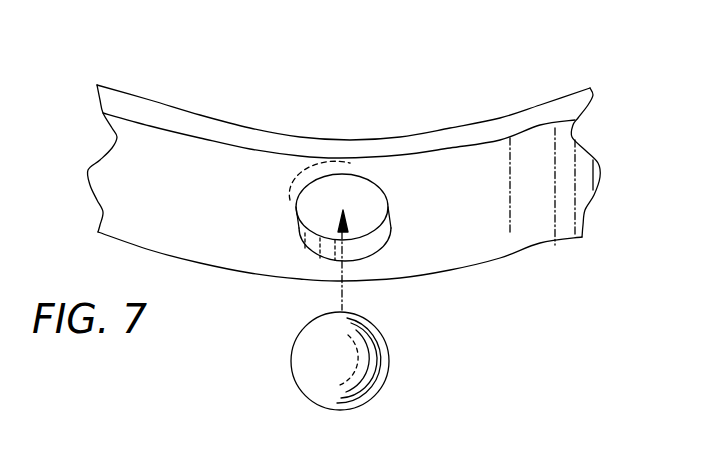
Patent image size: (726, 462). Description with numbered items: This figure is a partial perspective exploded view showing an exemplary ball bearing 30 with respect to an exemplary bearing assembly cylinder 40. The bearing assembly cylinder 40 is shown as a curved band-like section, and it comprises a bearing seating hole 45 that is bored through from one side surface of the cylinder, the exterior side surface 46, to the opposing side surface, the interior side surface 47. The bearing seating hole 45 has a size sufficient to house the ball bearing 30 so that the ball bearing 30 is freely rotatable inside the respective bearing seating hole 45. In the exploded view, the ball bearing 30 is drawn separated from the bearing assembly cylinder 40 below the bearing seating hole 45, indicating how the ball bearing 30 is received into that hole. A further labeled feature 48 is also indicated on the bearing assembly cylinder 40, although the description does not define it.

The ball bearing 30 is at (388, 360).
The bearing assembly cylinder 40 is at (493, 240).
The bearing seating hole 45 is at (312, 203).
The exterior side surface 46 is at (383, 187).
The interior side surface 47 is at (380, 166).
The band top edge 48 is at (313, 147).